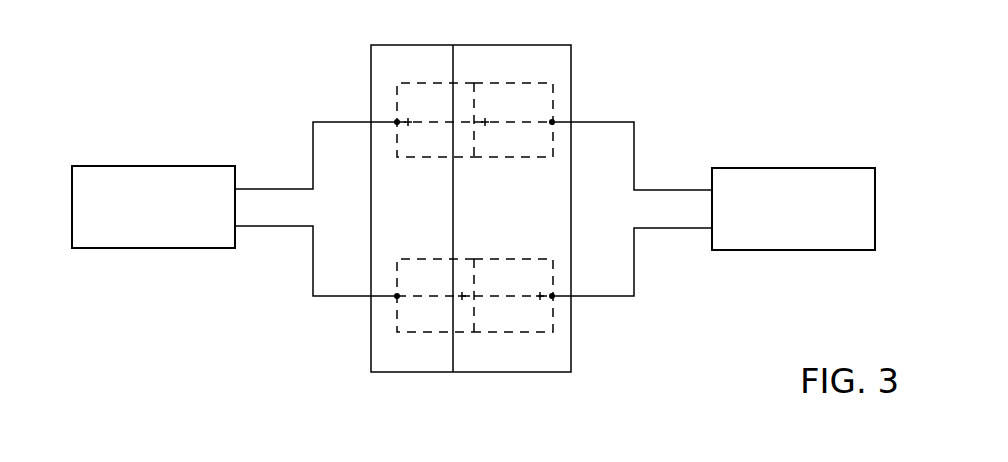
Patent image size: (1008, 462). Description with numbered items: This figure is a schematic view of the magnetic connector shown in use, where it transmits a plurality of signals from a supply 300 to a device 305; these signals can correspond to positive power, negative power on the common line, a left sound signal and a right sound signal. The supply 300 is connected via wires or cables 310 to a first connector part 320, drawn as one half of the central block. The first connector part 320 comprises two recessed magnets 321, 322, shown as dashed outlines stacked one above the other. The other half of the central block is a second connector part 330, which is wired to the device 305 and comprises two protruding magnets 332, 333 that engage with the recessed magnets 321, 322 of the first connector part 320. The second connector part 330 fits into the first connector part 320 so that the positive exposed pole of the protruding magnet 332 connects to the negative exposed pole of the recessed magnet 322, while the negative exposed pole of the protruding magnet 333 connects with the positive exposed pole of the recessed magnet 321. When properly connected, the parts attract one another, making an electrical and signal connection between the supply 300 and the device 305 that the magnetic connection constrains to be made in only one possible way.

The supply 300 is at (835, 167).
The device 305 is at (112, 165).
The wires or cables 310 is at (672, 230).
The first connector part 320 is at (564, 372).
The recessed magnet 321 is at (568, 90).
The recessed magnet 322 is at (490, 332).
The second connector part 330 is at (377, 372).
The protruding magnet 332 is at (406, 332).
The protruding magnet 333 is at (397, 90).